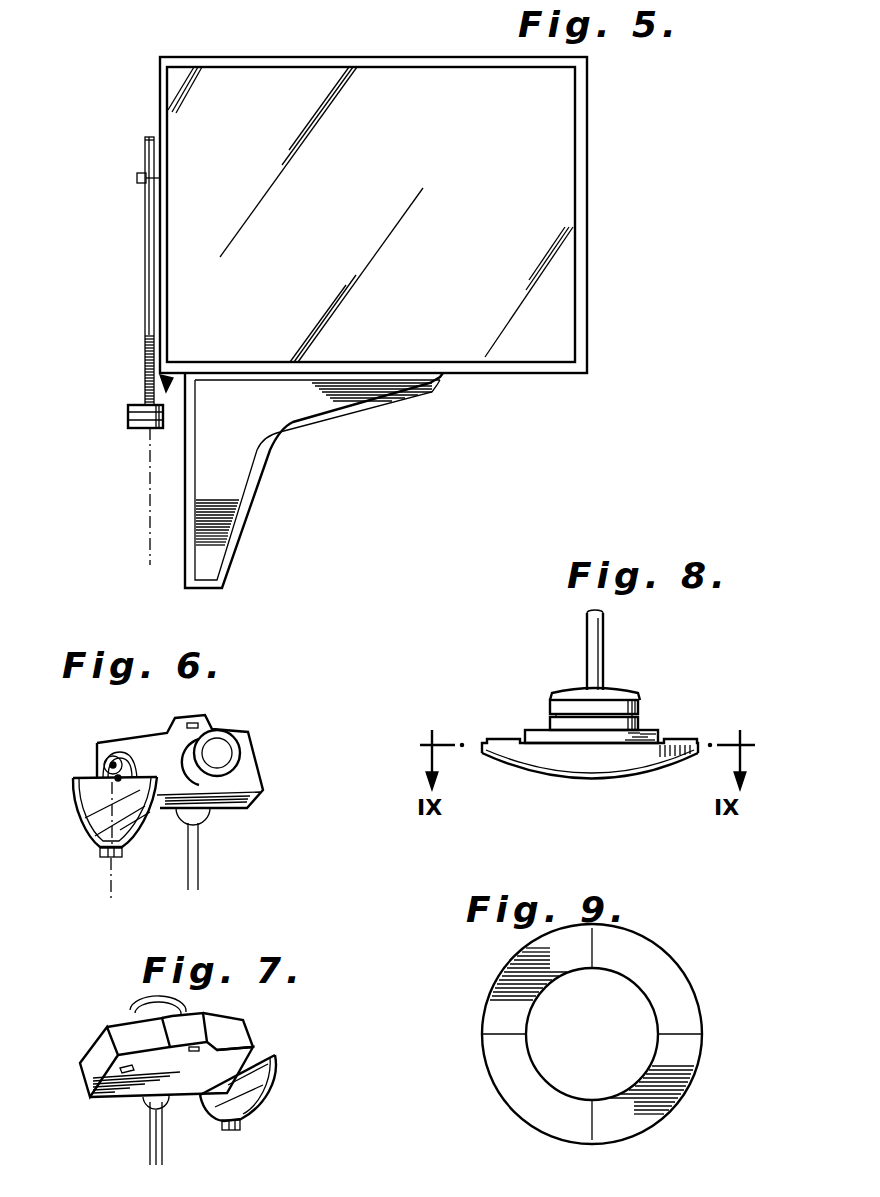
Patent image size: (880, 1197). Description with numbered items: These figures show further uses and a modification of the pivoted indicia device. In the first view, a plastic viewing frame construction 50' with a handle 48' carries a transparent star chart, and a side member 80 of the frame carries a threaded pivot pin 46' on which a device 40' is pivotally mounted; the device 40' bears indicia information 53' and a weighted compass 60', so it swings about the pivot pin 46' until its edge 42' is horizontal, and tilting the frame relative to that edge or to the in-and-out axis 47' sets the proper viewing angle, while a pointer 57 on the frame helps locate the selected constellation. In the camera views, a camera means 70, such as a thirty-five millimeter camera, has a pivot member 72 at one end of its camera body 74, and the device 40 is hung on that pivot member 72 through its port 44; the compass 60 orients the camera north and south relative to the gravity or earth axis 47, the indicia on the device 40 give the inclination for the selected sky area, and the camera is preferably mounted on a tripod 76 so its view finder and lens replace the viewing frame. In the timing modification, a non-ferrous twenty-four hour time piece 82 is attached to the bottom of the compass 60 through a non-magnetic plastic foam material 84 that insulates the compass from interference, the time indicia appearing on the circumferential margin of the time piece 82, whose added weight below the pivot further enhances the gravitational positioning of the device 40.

In FIG. 5, the frame 80 is at (150, 137).
In FIG. 5, the edge 42' is at (89, 121).
In FIG. 5, the pivot pin 46' is at (92, 196).
In FIG. 5, the device 40' is at (89, 271).
In FIG. 5, the indicia information 53' is at (99, 370).
In FIG. 5, the pointer 57 is at (166, 380).
In FIG. 5, the compass 60' is at (101, 445).
In FIG. 5, the axis 47' is at (90, 497).
In FIG. 5, the plastic viewing frame construction 50' is at (350, 480).
In FIG. 5, the handle 48' is at (284, 522).
In FIG. 6, the camera means 70 is at (240, 725).
In FIG. 7, the camera means 70 is at (105, 1020).
In FIG. 6, the camera body 74 is at (250, 775).
In FIG. 6, the tripod 76 is at (200, 850).
In FIG. 7, the tripod 76 is at (150, 1138).
In FIG. 6, the port 44 is at (127, 777).
In FIG. 6, the device 40 is at (91, 769).
In FIG. 7, the device 40 is at (288, 1083).
In FIG. 8, the device 40 is at (554, 641).
In FIG. 6, the pivot member 72 is at (100, 783).
In FIG. 6, the compass 60 is at (133, 880).
In FIG. 7, the compass 60 is at (267, 1148).
In FIG. 8, the compass 60 is at (624, 672).
In FIG. 6, the axis 47 is at (76, 870).
In FIG. 8, the non-magnetic plastic foam material 84 is at (537, 735).
In FIG. 8, the time piece 82 is at (575, 750).
In FIG. 9, the time piece 82 is at (673, 1098).